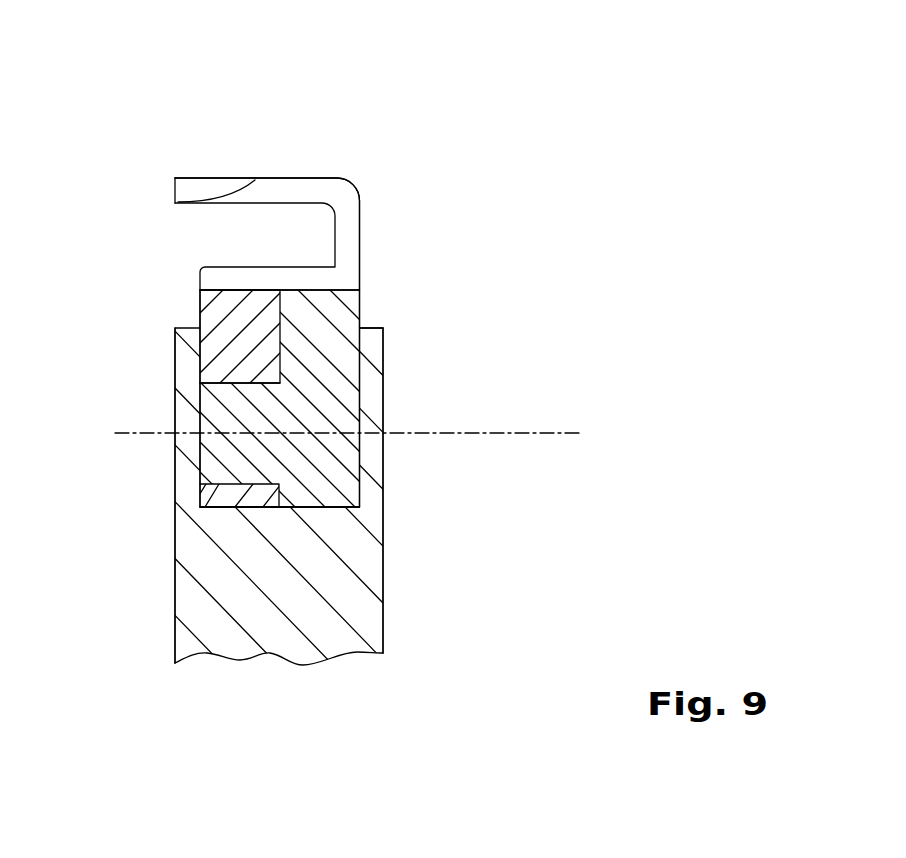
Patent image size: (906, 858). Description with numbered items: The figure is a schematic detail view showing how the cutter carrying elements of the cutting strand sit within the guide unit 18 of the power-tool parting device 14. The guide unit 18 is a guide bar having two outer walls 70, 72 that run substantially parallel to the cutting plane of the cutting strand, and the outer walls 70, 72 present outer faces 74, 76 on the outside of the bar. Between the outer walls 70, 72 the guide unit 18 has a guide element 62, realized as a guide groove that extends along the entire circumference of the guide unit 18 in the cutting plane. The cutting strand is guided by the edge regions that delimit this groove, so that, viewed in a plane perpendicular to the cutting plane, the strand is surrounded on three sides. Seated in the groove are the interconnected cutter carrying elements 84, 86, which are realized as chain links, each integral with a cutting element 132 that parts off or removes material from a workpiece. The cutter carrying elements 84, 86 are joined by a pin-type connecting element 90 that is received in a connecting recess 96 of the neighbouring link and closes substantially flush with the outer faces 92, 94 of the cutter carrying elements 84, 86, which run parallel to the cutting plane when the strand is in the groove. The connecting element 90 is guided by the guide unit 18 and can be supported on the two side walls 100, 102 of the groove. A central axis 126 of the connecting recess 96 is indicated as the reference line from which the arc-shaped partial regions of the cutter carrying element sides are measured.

The power-tool parting device 14 is at (498, 102).
The cutting element 132 is at (328, 183).
The cutter carrying element 86 is at (343, 313).
The side wall of the guide groove 100 is at (360, 404).
The outer face of the cutter carrying element 94 is at (200, 304).
The cutter carrying element 84 is at (230, 352).
The side wall of the guide groove 102 is at (198, 383).
The connecting element 90 is at (220, 447).
The connecting recess 96 is at (198, 495).
The outer face of the cutter carrying element 92 is at (360, 339).
The outer wall of the guide unit 72 is at (175, 531).
The guide unit 18 is at (363, 600).
The outer face of the outer wall 74 is at (385, 558).
The outer face of the outer wall 76 is at (175, 606).
The outer wall of the guide unit 70 is at (383, 618).
The guide element 62 is at (322, 509).
The central axis of the connecting recess 126 is at (566, 432).